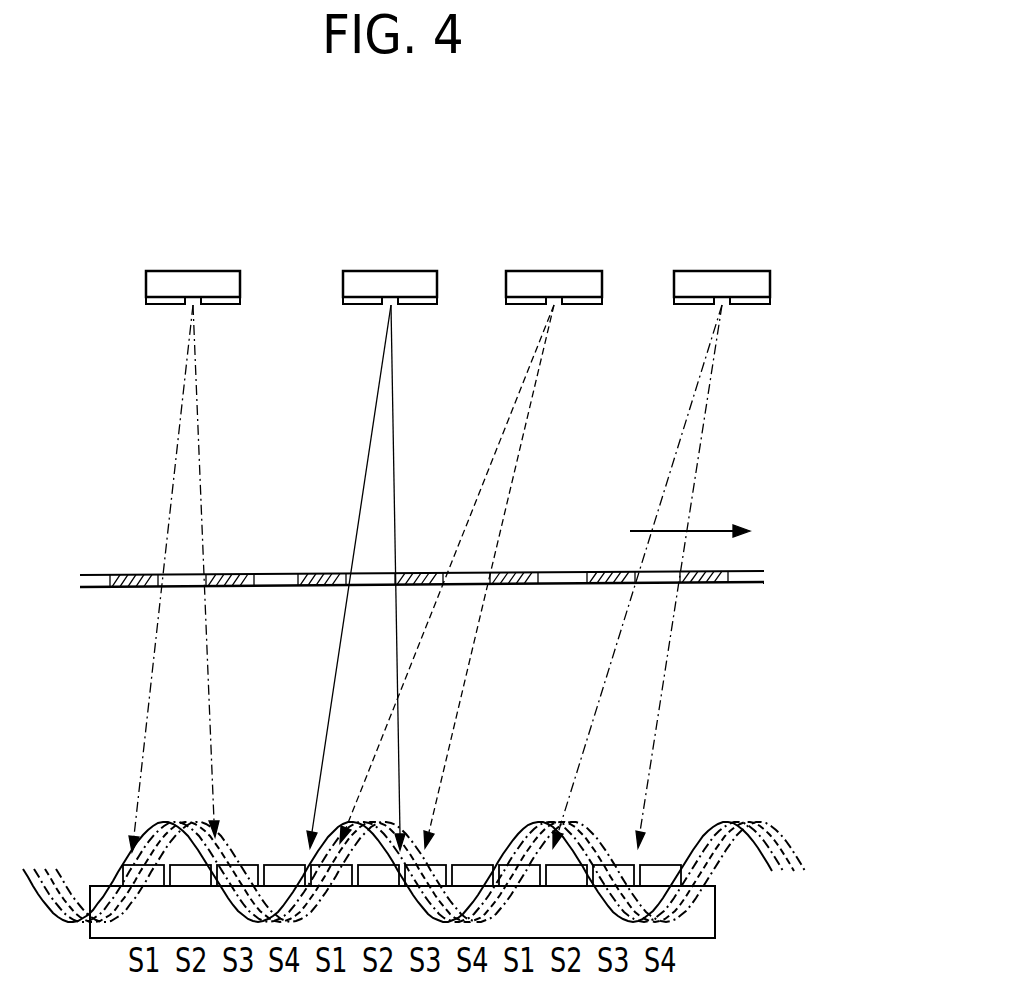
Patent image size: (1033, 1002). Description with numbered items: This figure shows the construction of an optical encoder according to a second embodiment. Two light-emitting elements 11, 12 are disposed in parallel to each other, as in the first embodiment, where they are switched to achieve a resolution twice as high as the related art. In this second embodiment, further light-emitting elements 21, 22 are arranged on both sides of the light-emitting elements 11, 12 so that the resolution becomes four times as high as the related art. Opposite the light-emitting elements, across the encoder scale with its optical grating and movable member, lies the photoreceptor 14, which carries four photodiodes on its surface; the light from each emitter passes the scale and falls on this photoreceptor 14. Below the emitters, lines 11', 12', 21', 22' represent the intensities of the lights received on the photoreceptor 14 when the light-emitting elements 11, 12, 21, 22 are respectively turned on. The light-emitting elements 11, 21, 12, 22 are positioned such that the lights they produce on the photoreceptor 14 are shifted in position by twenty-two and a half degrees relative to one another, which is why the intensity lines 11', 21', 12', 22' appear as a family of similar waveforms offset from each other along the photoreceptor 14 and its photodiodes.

The light-emitting element 11 is at (372, 529).
The light-emitting element 12 is at (471, 528).
The light-emitting element 21 is at (184, 530).
The light-emitting element 22 is at (661, 528).
The photoreceptor 14 is at (705, 913).
The line representing received light intensity 11' is at (397, 828).
The line representing received light intensity 12' is at (441, 836).
The line representing received light intensity 21' is at (408, 826).
The line representing received light intensity 22' is at (470, 864).